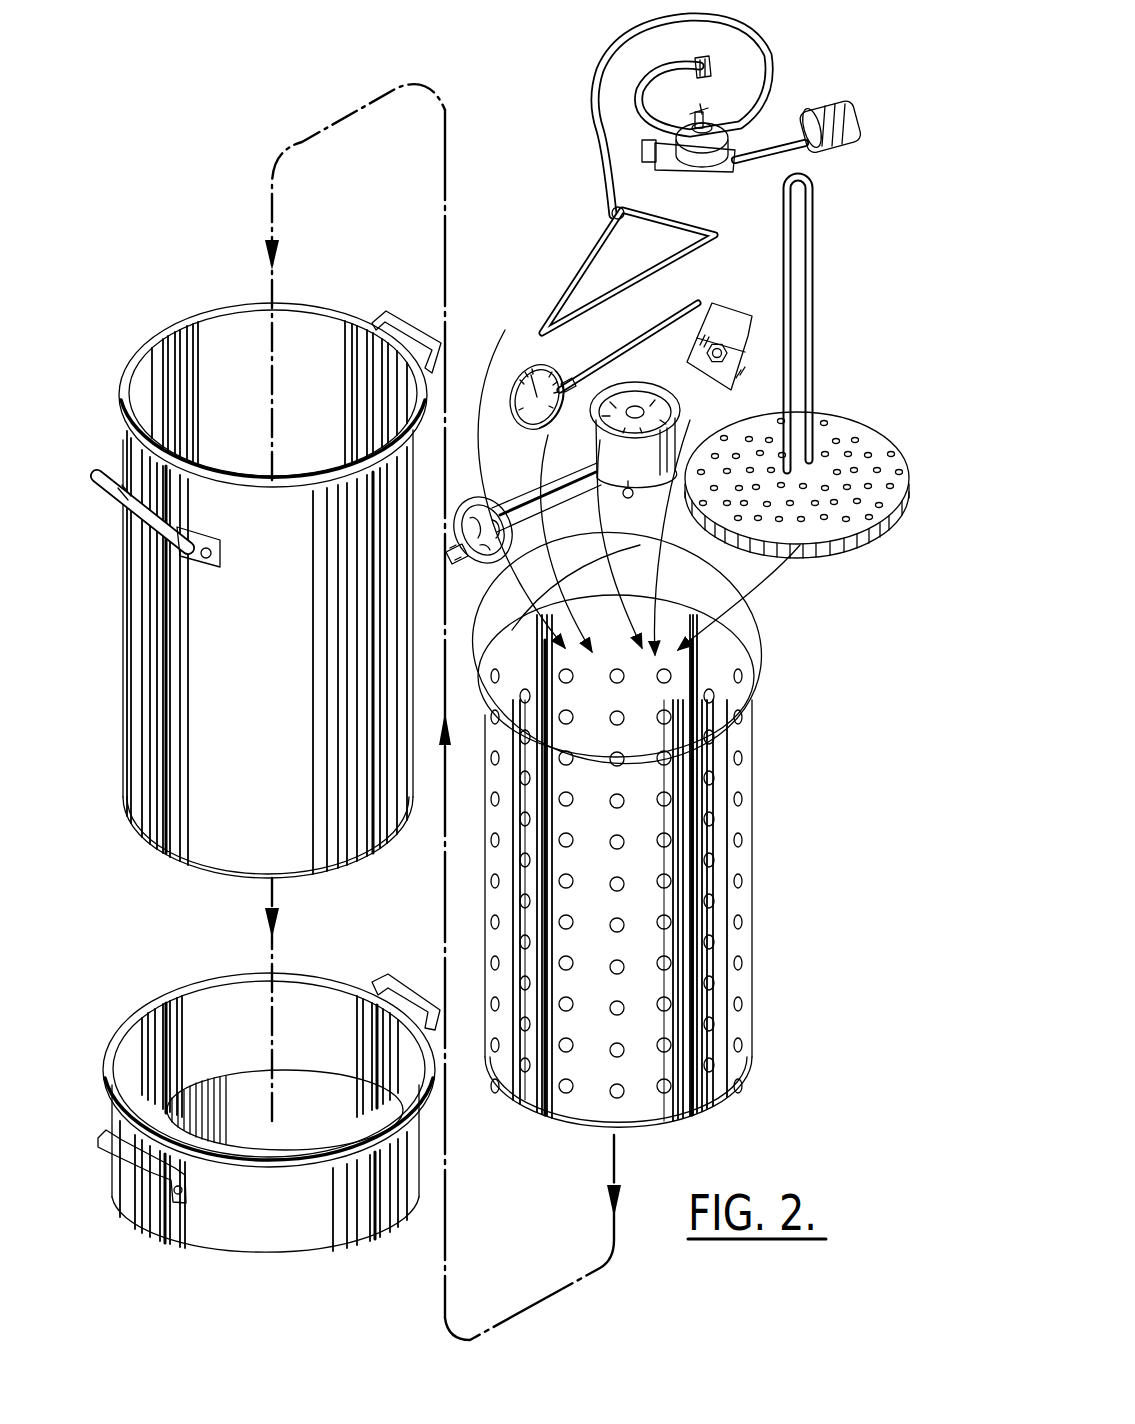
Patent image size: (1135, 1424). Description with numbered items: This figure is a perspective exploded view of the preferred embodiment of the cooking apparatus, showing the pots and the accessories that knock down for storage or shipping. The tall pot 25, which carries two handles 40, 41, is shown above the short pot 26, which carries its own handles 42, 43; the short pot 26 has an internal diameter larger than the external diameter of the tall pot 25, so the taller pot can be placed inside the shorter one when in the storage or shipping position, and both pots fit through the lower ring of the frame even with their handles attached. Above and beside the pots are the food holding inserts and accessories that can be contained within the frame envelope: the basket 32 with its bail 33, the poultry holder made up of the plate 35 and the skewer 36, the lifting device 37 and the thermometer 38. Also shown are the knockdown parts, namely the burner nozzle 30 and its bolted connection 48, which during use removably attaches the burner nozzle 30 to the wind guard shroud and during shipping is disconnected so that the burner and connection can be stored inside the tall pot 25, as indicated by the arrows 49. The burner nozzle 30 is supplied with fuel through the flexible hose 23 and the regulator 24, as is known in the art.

The flexible hose 23 is at (752, 48).
The regulator 24 is at (750, 120).
The tall pot 25 is at (168, 820).
The short pot 26 is at (187, 1222).
The burner nozzle 30 is at (497, 565).
The basket 32 is at (756, 768).
The bail 33 is at (748, 620).
The plate 35 is at (835, 548).
The skewer 36 is at (815, 292).
The lifting device 37 is at (578, 262).
The thermometer 38 is at (533, 368).
The handle 40 is at (122, 505).
The handle 41 is at (422, 320).
The handle 42 is at (132, 1172).
The handle 43 is at (402, 985).
The bolted connection 48 is at (738, 316).
The arrows 49 is at (503, 463).